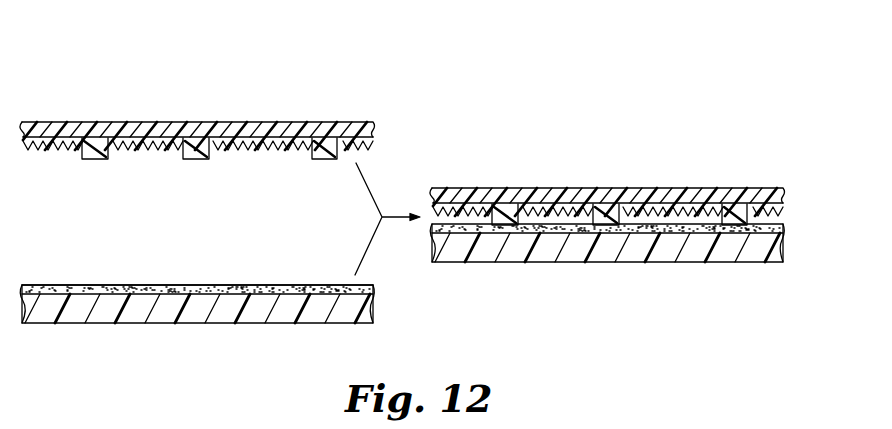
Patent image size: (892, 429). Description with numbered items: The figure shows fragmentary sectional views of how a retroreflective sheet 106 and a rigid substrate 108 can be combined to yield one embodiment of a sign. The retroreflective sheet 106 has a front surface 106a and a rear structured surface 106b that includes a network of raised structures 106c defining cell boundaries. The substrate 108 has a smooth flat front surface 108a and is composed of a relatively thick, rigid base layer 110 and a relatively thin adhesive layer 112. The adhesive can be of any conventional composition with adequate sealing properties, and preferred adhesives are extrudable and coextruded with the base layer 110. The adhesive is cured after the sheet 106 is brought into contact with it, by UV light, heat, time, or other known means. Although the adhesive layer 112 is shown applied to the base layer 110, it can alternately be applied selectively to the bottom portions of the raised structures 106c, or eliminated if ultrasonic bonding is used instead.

The retroreflective sheet 106 is at (262, 73).
The front surface 106a is at (112, 120).
The rear structured surface 106b is at (254, 150).
The raised structures 106c is at (92, 158).
The rigid substrate 108 is at (262, 263).
The front surface 108a is at (173, 285).
The base layer 110 is at (130, 323).
The adhesive layer 112 is at (63, 285).